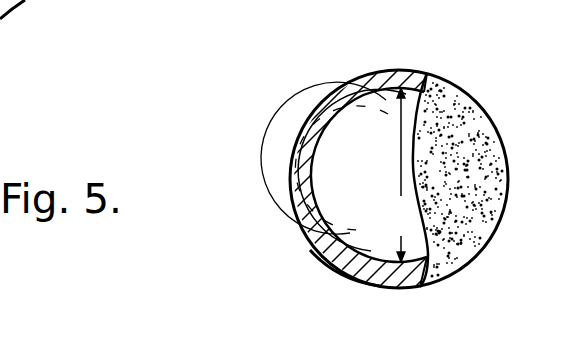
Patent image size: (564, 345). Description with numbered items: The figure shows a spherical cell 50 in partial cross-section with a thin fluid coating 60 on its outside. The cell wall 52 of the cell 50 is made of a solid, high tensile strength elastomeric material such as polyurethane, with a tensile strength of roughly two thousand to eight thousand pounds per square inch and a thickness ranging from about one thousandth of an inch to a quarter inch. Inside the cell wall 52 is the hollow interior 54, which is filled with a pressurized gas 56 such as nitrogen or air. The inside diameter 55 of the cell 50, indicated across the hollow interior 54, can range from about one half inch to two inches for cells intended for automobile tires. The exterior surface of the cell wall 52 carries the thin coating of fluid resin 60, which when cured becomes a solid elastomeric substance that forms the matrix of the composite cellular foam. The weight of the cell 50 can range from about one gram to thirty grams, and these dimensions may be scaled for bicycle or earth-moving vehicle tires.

The cell 50 is at (375, 68).
The cell wall 52 is at (300, 162).
The hollow interior 54 is at (342, 270).
The inside diameter 55 is at (399, 175).
The pressurized gas 56 is at (375, 168).
The thin fluid coating 60 is at (467, 186).